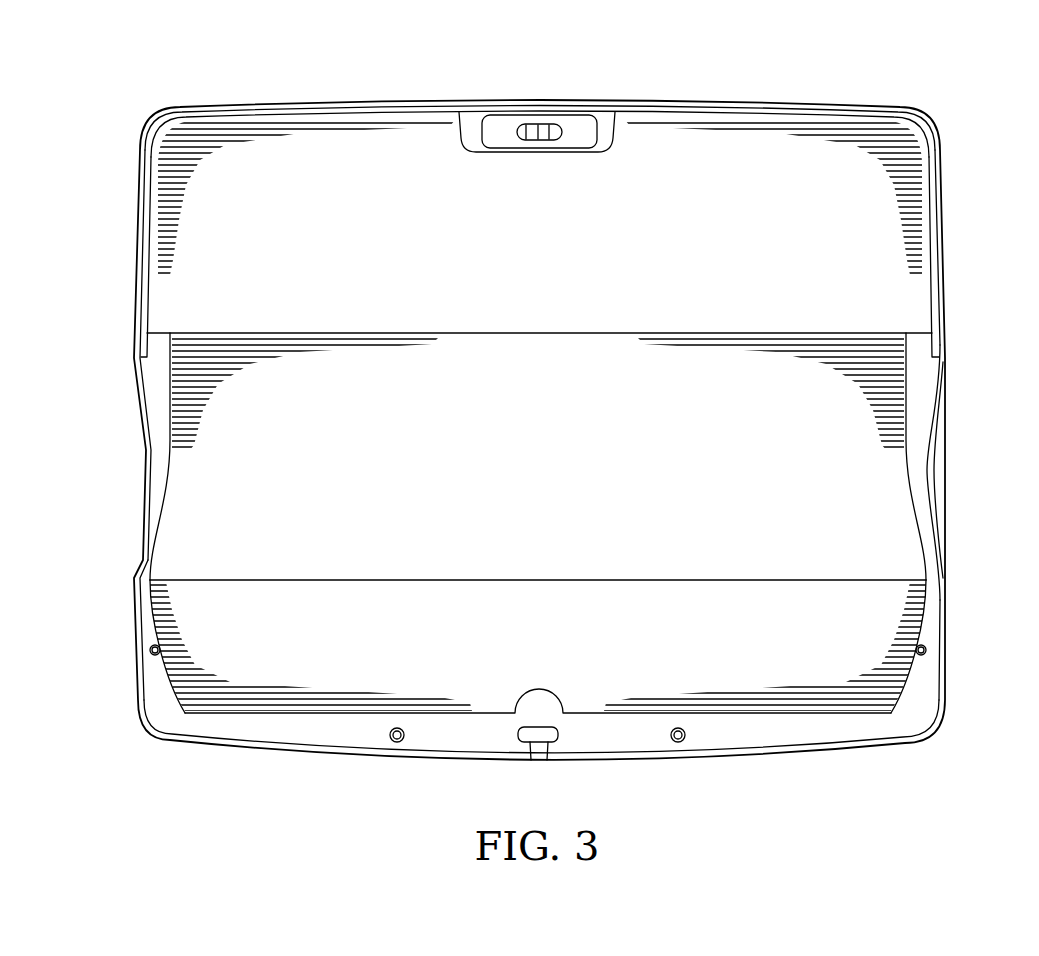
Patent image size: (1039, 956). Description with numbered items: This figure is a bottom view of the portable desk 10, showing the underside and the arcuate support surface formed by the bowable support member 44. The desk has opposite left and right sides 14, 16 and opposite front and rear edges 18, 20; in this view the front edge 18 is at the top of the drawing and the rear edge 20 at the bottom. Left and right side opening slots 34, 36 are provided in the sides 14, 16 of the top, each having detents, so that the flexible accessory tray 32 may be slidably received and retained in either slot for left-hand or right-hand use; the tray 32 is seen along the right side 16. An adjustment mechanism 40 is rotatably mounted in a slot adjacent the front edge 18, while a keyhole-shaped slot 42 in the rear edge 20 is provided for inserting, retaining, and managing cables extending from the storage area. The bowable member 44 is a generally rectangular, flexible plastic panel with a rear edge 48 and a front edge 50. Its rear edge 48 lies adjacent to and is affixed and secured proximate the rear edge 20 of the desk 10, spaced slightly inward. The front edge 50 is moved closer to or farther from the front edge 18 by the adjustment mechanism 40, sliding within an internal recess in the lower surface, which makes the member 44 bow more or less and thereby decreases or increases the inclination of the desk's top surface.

The portable desk 10 is at (974, 137).
The left side 14 is at (139, 246).
The right side 16 is at (940, 247).
The front edge 18 is at (300, 105).
The rear edge 20 is at (740, 752).
The accessory tray 32 is at (941, 446).
The left side opening slot 34 is at (133, 598).
The right side opening slot 36 is at (946, 600).
The adjustment mechanism 40 is at (545, 140).
The keyhole-shaped slot 42 is at (534, 763).
The bowable support member 44 is at (552, 482).
The rear edge of bowable member 48 is at (255, 713).
The front edge of bowable member 50 is at (250, 333).